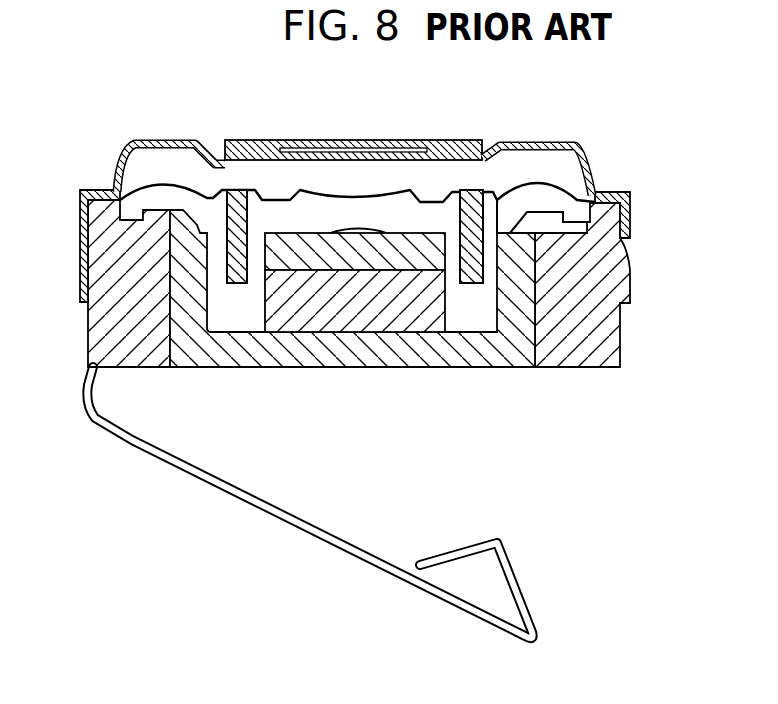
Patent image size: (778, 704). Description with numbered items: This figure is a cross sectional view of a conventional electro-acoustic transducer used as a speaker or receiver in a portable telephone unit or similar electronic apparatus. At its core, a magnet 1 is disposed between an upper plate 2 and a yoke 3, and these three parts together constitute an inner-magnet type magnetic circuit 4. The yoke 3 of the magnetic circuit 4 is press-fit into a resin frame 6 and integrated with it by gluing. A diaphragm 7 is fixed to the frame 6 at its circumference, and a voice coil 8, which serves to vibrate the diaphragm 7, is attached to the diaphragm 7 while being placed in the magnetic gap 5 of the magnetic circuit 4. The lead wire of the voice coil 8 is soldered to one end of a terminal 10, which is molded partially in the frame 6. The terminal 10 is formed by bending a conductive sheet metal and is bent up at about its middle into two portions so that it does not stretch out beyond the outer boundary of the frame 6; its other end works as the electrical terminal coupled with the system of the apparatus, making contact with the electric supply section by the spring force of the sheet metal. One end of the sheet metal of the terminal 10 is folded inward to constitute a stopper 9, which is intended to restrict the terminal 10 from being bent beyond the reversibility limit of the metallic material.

The magnet 1 is at (340, 313).
The upper plate 2 is at (380, 262).
The yoke 3 is at (250, 347).
The magnetic circuit 4 is at (352, 435).
The magnetic gap 5 is at (490, 243).
The resin frame 6 is at (597, 262).
The diaphragm 7 is at (353, 196).
The voice coil 8 is at (237, 197).
The stopper 9 is at (515, 575).
The terminal 10 is at (157, 457).